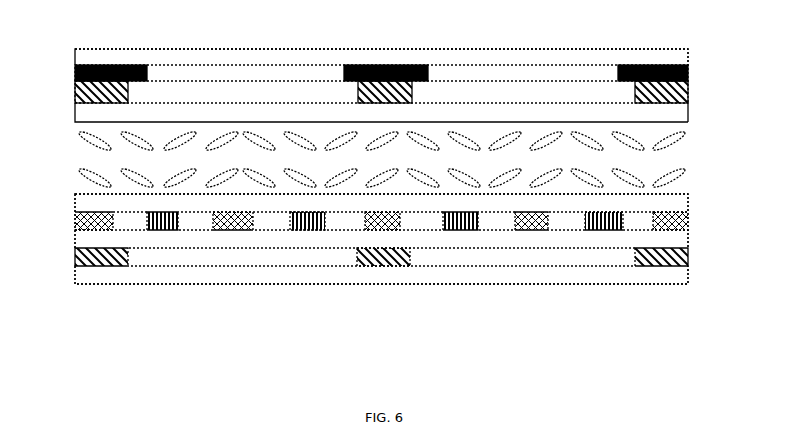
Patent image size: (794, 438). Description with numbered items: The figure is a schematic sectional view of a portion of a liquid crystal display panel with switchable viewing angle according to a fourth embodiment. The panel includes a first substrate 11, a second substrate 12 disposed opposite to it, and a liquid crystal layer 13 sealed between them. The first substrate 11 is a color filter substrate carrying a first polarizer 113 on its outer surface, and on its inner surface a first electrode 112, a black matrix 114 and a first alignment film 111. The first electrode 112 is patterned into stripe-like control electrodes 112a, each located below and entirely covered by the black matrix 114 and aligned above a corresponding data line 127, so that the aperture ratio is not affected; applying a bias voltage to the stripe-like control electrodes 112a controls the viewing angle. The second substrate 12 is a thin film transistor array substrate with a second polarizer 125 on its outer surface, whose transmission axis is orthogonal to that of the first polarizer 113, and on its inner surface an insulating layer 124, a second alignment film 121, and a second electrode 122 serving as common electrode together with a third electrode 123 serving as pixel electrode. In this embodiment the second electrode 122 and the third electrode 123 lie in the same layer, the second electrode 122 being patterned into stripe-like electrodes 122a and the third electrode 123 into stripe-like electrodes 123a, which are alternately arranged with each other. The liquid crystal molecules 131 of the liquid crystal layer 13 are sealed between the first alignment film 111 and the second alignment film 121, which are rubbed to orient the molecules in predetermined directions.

The first substrate 11 is at (62, 47).
The first alignment film 111 is at (688, 113).
The first electrode 112 is at (689, 91).
The stripe-like control electrode 112a is at (408, 65).
The first polarizer 113 is at (688, 52).
The black matrix 114 is at (688, 70).
The second substrate 12 is at (62, 190).
The second alignment film 121 is at (688, 198).
The second electrode 122 is at (532, 230).
The stripe-like electrode 122a is at (228, 231).
The third electrode 123 is at (605, 230).
The stripe-like electrode 123a is at (305, 231).
The insulating layer 124 is at (688, 245).
The second polarizer 125 is at (688, 277).
The data line 127 is at (95, 267).
The liquid crystal layer 13 is at (62, 190).
The liquid crystal molecules 131 is at (668, 138).